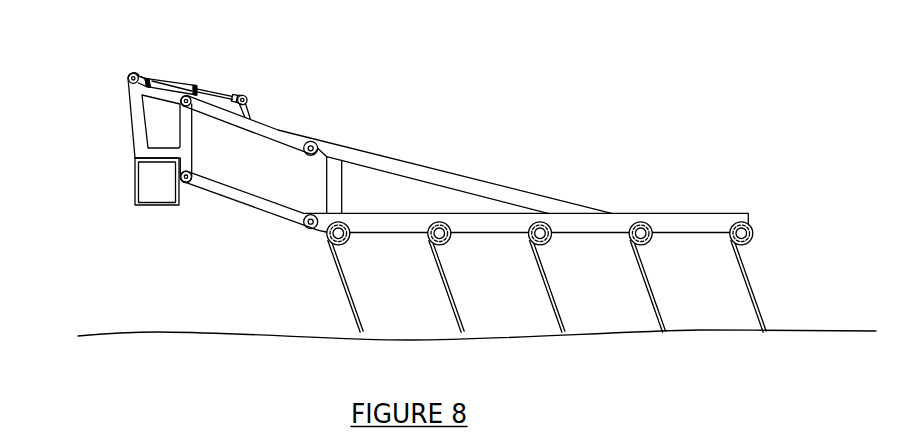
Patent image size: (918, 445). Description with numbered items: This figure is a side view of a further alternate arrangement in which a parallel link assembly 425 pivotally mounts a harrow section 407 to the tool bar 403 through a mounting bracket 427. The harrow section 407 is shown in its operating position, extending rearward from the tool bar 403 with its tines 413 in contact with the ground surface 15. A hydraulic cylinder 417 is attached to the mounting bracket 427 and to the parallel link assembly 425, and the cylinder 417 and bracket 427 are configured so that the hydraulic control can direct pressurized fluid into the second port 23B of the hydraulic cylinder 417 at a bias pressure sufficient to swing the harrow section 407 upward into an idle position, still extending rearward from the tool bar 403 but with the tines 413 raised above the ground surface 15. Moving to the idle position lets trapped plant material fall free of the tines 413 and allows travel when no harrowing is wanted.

The ground surface 15 is at (143, 332).
The second port 23B is at (194, 88).
The tool bar 403 is at (135, 182).
The harrow section 407 is at (686, 213).
The tines 413 is at (757, 288).
The hydraulic cylinder 417 is at (170, 81).
The parallel link assembly 425 is at (286, 124).
The mounting bracket 427 is at (128, 121).